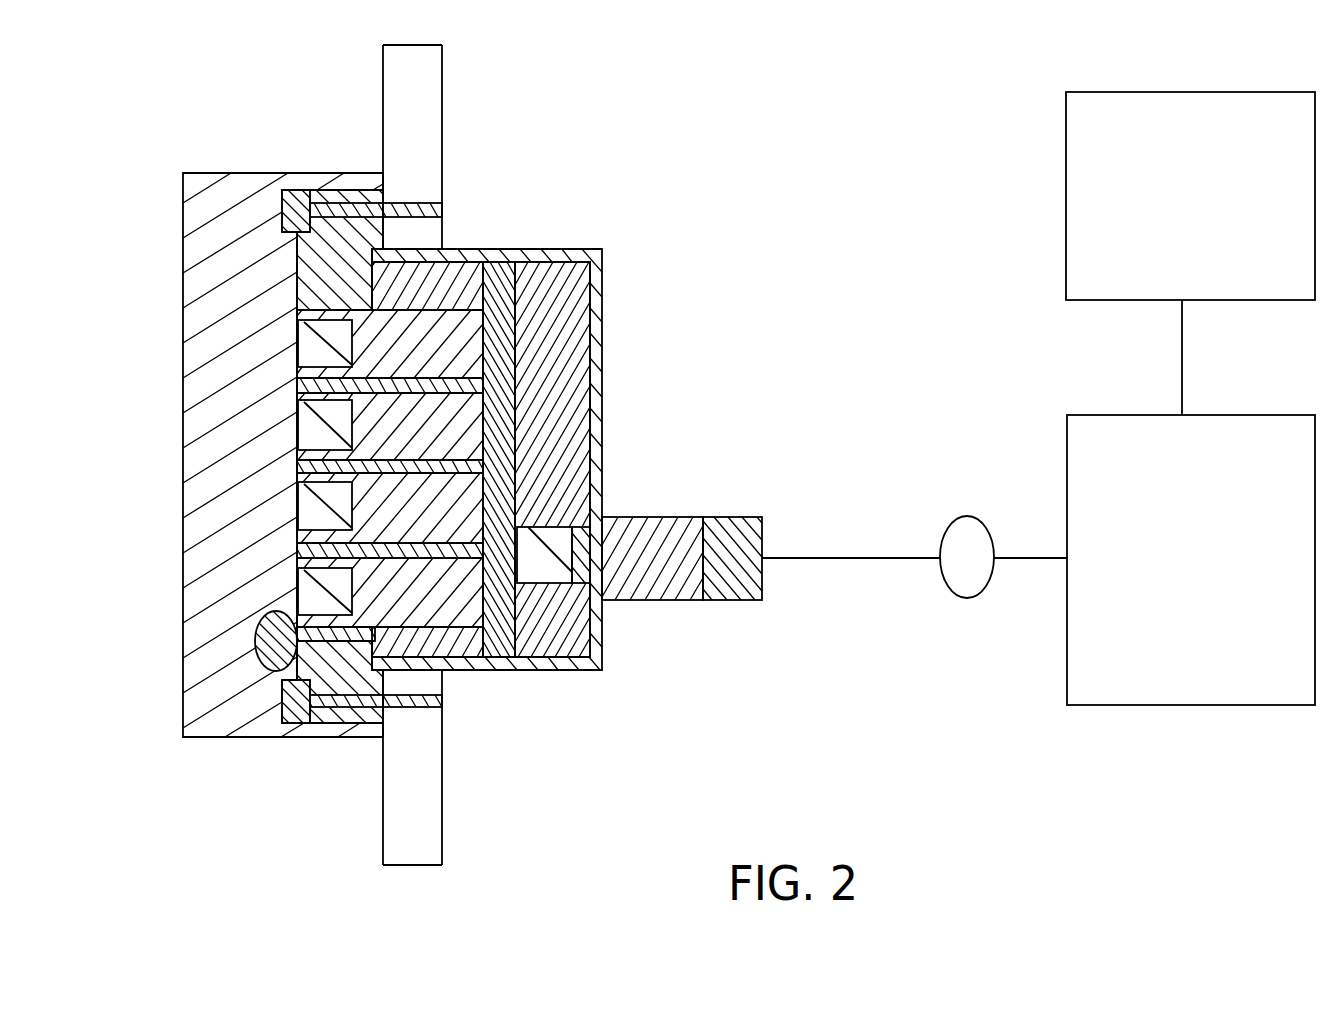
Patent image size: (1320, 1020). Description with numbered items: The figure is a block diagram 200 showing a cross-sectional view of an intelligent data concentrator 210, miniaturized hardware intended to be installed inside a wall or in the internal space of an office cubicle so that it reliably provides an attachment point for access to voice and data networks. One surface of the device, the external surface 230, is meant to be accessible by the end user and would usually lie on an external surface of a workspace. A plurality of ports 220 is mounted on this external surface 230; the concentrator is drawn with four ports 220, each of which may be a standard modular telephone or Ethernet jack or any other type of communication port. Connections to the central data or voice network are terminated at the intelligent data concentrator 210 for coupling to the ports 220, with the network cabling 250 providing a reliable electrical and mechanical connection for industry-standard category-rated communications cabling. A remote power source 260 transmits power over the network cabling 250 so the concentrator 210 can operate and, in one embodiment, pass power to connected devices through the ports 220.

The block diagram 200 is at (132, 74).
The intelligent data concentrator 210 is at (482, 250).
The ports 220 is at (283, 535).
The external surface 230 is at (297, 251).
The network cabling 250 is at (797, 557).
The remote power source 260 is at (1205, 143).